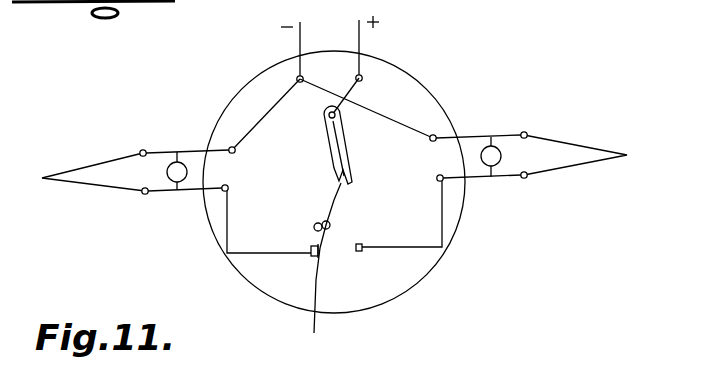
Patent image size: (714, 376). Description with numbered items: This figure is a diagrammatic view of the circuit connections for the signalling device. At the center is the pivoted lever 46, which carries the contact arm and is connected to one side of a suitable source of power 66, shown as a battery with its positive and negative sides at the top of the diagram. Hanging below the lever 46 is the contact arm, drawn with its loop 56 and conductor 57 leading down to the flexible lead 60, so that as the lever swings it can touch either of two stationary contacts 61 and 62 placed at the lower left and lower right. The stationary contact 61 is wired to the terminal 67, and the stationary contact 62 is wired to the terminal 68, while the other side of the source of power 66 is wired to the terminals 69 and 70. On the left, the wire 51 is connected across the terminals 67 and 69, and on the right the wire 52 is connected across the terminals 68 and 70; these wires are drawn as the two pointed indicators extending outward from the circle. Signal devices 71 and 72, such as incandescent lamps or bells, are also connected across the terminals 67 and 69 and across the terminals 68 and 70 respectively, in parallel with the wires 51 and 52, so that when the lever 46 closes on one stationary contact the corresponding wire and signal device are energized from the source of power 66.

The lever 46 is at (340, 143).
The wire 51 is at (100, 163).
The wire 52 is at (587, 143).
The armature blade 56 is at (330, 183).
The flexible contact arm 57 is at (342, 202).
The conductor 60 is at (327, 298).
The stationary contact 61 is at (311, 258).
The stationary contact 62 is at (361, 252).
The source of power 66 is at (356, 29).
The terminal 67 is at (223, 191).
The terminal 68 is at (443, 181).
The terminal 69 is at (229, 147).
The terminal 70 is at (436, 135).
The signal device 71 is at (173, 163).
The signal device 72 is at (495, 137).